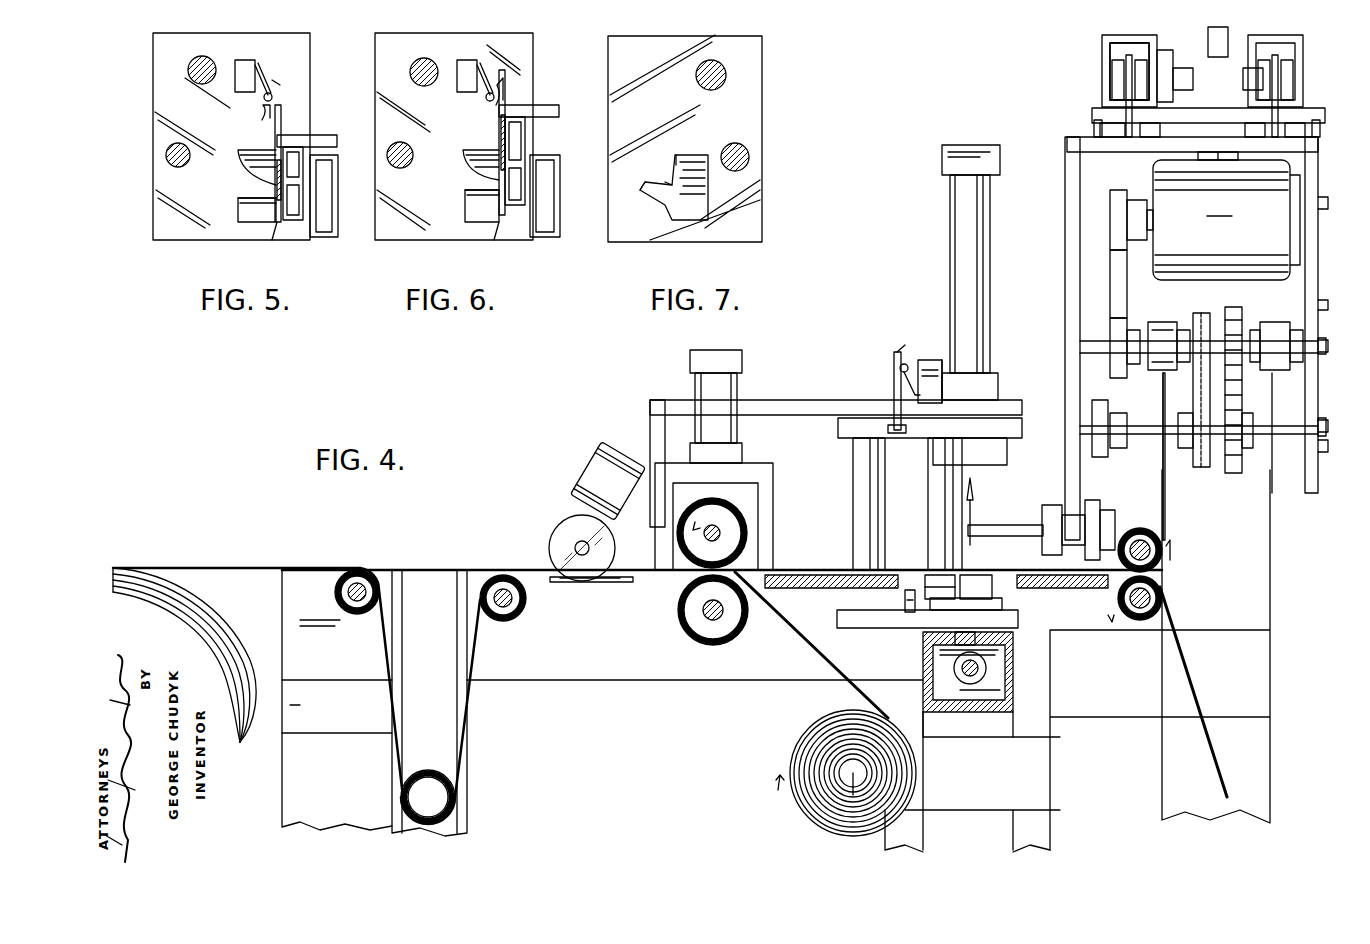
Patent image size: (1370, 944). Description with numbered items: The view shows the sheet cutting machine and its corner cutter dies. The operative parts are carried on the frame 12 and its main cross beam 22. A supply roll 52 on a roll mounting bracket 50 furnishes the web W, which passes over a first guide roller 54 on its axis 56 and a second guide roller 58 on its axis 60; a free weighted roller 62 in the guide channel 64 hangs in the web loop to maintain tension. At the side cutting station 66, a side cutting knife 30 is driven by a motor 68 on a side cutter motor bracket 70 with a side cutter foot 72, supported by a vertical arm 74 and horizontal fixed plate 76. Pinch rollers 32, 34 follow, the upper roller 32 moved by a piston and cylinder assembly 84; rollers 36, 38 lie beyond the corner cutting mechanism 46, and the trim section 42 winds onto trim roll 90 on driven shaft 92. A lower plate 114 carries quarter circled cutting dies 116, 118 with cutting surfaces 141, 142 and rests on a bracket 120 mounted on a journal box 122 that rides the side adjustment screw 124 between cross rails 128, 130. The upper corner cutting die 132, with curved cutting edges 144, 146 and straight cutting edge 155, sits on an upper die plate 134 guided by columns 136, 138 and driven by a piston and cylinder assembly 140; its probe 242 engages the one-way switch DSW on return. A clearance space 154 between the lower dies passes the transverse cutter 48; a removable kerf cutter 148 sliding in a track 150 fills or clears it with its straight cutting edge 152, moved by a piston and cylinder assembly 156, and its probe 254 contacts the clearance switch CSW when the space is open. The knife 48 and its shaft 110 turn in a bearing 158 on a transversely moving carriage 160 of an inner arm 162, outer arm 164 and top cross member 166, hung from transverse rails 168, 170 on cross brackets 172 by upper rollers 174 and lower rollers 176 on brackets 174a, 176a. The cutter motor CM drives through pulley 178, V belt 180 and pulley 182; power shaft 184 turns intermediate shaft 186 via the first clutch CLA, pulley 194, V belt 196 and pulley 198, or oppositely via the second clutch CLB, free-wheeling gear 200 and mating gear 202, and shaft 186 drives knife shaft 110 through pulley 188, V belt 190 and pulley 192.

In FIG. 4, the frame 12 is at (604, 692).
In FIG. 4, the main cross beam 22 is at (282, 805).
In FIG. 4, the side cutting knife 30 is at (560, 538).
In FIG. 4, the driven pinch roller 32 is at (748, 530).
In FIG. 4, the driven pinch roller 34 is at (735, 640).
In FIG. 4, the driven guide roller 36 is at (1165, 550).
In FIG. 4, the driven guide roller 38 is at (1165, 598).
In FIG. 4, the trim section 42 is at (850, 690).
In FIG. 4, the corner cutting mechanism 46 is at (907, 322).
In FIG. 4, the transverse cutter 48 is at (975, 495).
In FIG. 4, the roll mounting bracket 50 is at (346, 722).
In FIG. 4, the supply roll 52 is at (160, 568).
In FIG. 4, the first guide roller 54 is at (345, 572).
In FIG. 4, the axis 56 is at (346, 598).
In FIG. 4, the second guide roller 58 is at (522, 614).
In FIG. 4, the axis 60 is at (498, 612).
In FIG. 4, the free weighted roller 62 is at (456, 803).
In FIG. 4, the guide channel 64 is at (458, 742).
In FIG. 4, the side cutting station 66 is at (533, 552).
In FIG. 4, the motor 68 is at (572, 482).
In FIG. 4, the side cutter motor bracket 70 is at (652, 470).
In FIG. 4, the side cutter foot 72 is at (625, 582).
In FIG. 4, the vertical arm 74 is at (650, 418).
In FIG. 4, the horizontal fixed plate 76 is at (768, 403).
In FIG. 4, the piston and cylinder assembly 84 is at (742, 362).
In FIG. 4, the trim roll 90 is at (810, 815).
In FIG. 4, the driven shaft 92 is at (863, 799).
In FIG. 4, the shaft 110 is at (1015, 525).
In FIG. 5, the lower plate 114 is at (153, 222).
In FIG. 6, the lower plate 114 is at (385, 242).
In FIG. 4, the lower plate 114 is at (837, 620).
In FIG. 5, the quarter circled cutting die 116 is at (238, 215).
In FIG. 6, the quarter circled cutting die 116 is at (468, 215).
In FIG. 4, the quarter circled cutting die 116 is at (975, 575).
In FIG. 5, the quarter circled cutting die 118 is at (240, 150).
In FIG. 6, the quarter circled cutting die 118 is at (470, 150).
In FIG. 4, the quarter circled cutting die 118 is at (938, 585).
In FIG. 4, the bracket 120 is at (975, 645).
In FIG. 4, the movable journal box 122 is at (1005, 690).
In FIG. 4, the threaded side adjustment screw 124 is at (970, 680).
In FIG. 4, the cross rail 128 is at (923, 668).
In FIG. 4, the cross rail 130 is at (1000, 715).
In FIG. 7, the upper corner cutting die 132 is at (683, 155).
In FIG. 4, the upper corner cutting die 132 is at (1007, 455).
In FIG. 7, the upper die plate 134 is at (763, 113).
In FIG. 4, the upper die plate 134 is at (838, 428).
In FIG. 5, the vertical support and guide column 136 is at (188, 70).
In FIG. 6, the vertical support and guide column 136 is at (410, 72).
In FIG. 7, the vertical support and guide column 136 is at (725, 80).
In FIG. 4, the vertical support and guide column 136 is at (853, 485).
In FIG. 5, the vertical support and guide column 138 is at (166, 155).
In FIG. 6, the vertical support and guide column 138 is at (400, 168).
In FIG. 7, the vertical support and guide column 138 is at (750, 157).
In FIG. 4, the vertical support and guide column 138 is at (928, 490).
In FIG. 4, the piston and cylinder assembly 140 is at (962, 230).
In FIG. 5, the quarter circle cutting surface 141 is at (245, 205).
In FIG. 6, the quarter circle cutting surface 141 is at (475, 205).
In FIG. 5, the quarter circle cutting surface 142 is at (240, 178).
In FIG. 6, the quarter circle cutting surface 142 is at (468, 168).
In FIG. 7, the curved cutting edge 144 is at (665, 205).
In FIG. 7, the curved cutting edge 146 is at (668, 182).
In FIG. 5, the removable kerf cutter 148 is at (280, 135).
In FIG. 6, the removable kerf cutter 148 is at (515, 105).
In FIG. 4, the removable kerf cutter 148 is at (907, 612).
In FIG. 5, the track 150 is at (274, 226).
In FIG. 6, the track 150 is at (497, 228).
In FIG. 5, the straight cutting edge 152 is at (276, 188).
In FIG. 6, the straight cutting edge 152 is at (500, 140).
In FIG. 5, the clearance space 154 is at (303, 185).
In FIG. 6, the clearance space 154 is at (527, 185).
In FIG. 7, the straight cutting edge 155 is at (645, 188).
In FIG. 5, the piston and cylinder assembly 156 is at (326, 240).
In FIG. 6, the piston and cylinder assembly 156 is at (548, 240).
In FIG. 4, the piston and cylinder assembly 156 is at (1000, 612).
In FIG. 4, the bearing 158 is at (1062, 505).
In FIG. 4, the transversely moving carriage 160 is at (1333, 478).
In FIG. 4, the inner arm 162 is at (1065, 270).
In FIG. 4, the outer arm 164 is at (1318, 236).
In FIG. 4, the top cross member 166 is at (1310, 145).
In FIG. 4, the transverse rail 168 is at (1110, 35).
In FIG. 4, the transverse rail 170 is at (1288, 35).
In FIG. 4, the cross bracket 172 is at (1300, 118).
In FIG. 4, the upper roller 174 is at (1102, 62).
In FIG. 4, the bracket 174a is at (1130, 60).
In FIG. 4, the lower roller 176 is at (1092, 118).
In FIG. 4, the bracket 176a is at (1305, 135).
In FIG. 4, the pulley 178 is at (1110, 210).
In FIG. 4, the V belt 180 is at (1115, 260).
In FIG. 4, the second pulley 182 is at (1110, 322).
In FIG. 4, the power shaft 184 is at (1322, 352).
In FIG. 4, the intermediate shaft 186 is at (1324, 424).
In FIG. 4, the pulley 188 is at (1108, 410).
In FIG. 4, the V belt 190 is at (1122, 450).
In FIG. 4, the pulley 192 is at (1108, 508).
In FIG. 4, the pulley 194 is at (1205, 318).
In FIG. 4, the V belt 196 is at (1195, 398).
In FIG. 4, the pulley 198 is at (1190, 455).
In FIG. 4, the free-wheeling gear 200 is at (1242, 315).
In FIG. 4, the mating gear 202 is at (1235, 475).
In FIG. 4, the probe 242 is at (893, 355).
In FIG. 5, the probe 254 is at (241, 109).
In FIG. 6, the probe 254 is at (508, 75).
In FIG. 5, the clearance switch CSW is at (245, 60).
In FIG. 6, the clearance switch CSW is at (467, 60).
In FIG. 4, the one-way switch DSW is at (918, 375).
In FIG. 4, the first clutch CLA is at (1162, 322).
In FIG. 4, the second clutch CLB is at (1290, 345).
In FIG. 4, the cutter motor CM is at (1221, 216).
In FIG. 4, the web material W is at (236, 568).